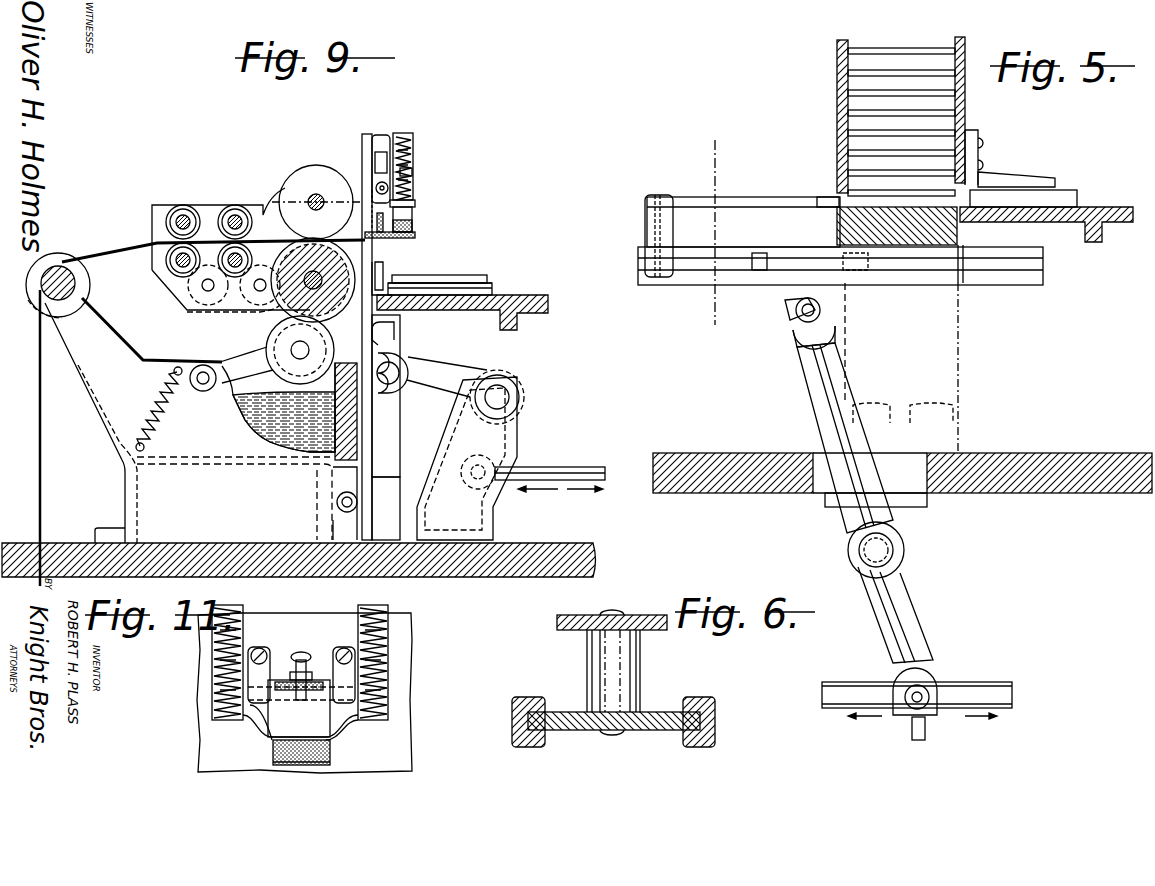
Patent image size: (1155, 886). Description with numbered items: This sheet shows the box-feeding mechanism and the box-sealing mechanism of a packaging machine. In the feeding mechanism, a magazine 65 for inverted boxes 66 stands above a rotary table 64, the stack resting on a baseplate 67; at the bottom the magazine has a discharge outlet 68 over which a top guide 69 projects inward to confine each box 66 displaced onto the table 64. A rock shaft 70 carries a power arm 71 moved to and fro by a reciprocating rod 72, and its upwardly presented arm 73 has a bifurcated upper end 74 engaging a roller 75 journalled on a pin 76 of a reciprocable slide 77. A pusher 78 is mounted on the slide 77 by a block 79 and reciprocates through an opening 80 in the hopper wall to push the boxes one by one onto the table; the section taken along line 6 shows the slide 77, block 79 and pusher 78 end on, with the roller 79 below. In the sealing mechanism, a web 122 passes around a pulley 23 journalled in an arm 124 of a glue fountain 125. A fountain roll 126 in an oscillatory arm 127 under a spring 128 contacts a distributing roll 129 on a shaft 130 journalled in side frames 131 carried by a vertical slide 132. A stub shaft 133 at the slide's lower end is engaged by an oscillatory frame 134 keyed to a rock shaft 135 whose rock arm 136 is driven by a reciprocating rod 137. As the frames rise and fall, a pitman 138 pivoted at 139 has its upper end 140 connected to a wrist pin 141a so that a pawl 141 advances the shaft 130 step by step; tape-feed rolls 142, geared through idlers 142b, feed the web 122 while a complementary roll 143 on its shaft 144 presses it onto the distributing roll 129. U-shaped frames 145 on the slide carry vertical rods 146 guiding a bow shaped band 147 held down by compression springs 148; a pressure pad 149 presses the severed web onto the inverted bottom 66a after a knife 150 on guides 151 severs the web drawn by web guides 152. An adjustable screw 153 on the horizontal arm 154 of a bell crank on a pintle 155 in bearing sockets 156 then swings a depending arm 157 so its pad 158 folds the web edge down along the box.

In FIG. 5, the section line 6 is at (714, 229).
In FIG. 9, the feed roller 23 is at (40, 290).
In FIG. 9, the rotary table 64 is at (549, 303).
In FIG. 5, the rotary table 64 is at (1125, 207).
In FIG. 5, the magazine 65 is at (837, 75).
In FIG. 9, the box 66 is at (484, 290).
In FIG. 5, the box 66 is at (886, 75).
In FIG. 9, the inverted bottom 66a is at (488, 276).
In FIG. 5, the baseplate 67 is at (920, 260).
In FIG. 5, the discharge outlet 68 is at (962, 215).
In FIG. 5, the top guide 69 is at (1022, 180).
In FIG. 5, the rock shaft 70 is at (893, 545).
In FIG. 5, the power arm 71 is at (910, 617).
In FIG. 5, the reciprocating rod 72 is at (1005, 690).
In FIG. 5, the upwardly presented arm 73 is at (822, 418).
In FIG. 5, the bifurcated upper end 74 is at (830, 325).
In FIG. 5, the roller 75 is at (796, 314).
In FIG. 5, the pin 76 is at (800, 330).
In FIG. 5, the slide 77 is at (703, 268).
In FIG. 6, the slide 77 is at (590, 725).
In FIG. 5, the pusher 78 is at (745, 202).
In FIG. 6, the pusher 78 is at (637, 628).
In FIG. 5, the block 79 is at (645, 216).
In FIG. 6, the block 79 is at (636, 668).
In FIG. 5, the opening 80 is at (838, 195).
In FIG. 9, the web 122 is at (40, 491).
In FIG. 9, the arm 124 is at (91, 423).
In FIG. 9, the glue fountain 125 is at (287, 411).
In FIG. 9, the fountain roll 126 is at (306, 357).
In FIG. 9, the oscillatory arm 127 is at (255, 360).
In FIG. 9, the spring 128 is at (150, 425).
In FIG. 9, the distributing roll 129 is at (383, 278).
In FIG. 9, the shaft 130 is at (440, 287).
In FIG. 9, the side frames 131 is at (188, 292).
In FIG. 9, the slide 132 is at (366, 135).
In FIG. 11, the slide 132 is at (405, 737).
In FIG. 9, the stub shaft 133 is at (396, 385).
In FIG. 9, the oscillatory frame 134 is at (468, 372).
In FIG. 9, the rock shaft 135 is at (510, 397).
In FIG. 9, the rock arm 136 is at (462, 440).
In FIG. 9, the reciprocating rod 137 is at (578, 468).
In FIG. 9, the pitman 138 is at (318, 470).
In FIG. 9, the pivot 139 is at (337, 505).
In FIG. 9, the upper end of pitman 140 is at (322, 283).
In FIG. 9, the pawl 141 is at (290, 240).
In FIG. 9, the wrist pin 141a is at (300, 349).
In FIG. 9, the tape-feed rolls 142 is at (213, 240).
In FIG. 9, the idlers 142b is at (195, 312).
In FIG. 9, the complementary roll 143 is at (300, 170).
In FIG. 9, the shaft 144 is at (318, 193).
In FIG. 9, the U-shaped frames 145 is at (404, 135).
In FIG. 11, the U-shaped frames 145 is at (212, 628).
In FIG. 9, the vertical rod 146 is at (413, 145).
In FIG. 11, the vertical rod 146 is at (212, 684).
In FIG. 9, the bow shaped band 147 is at (415, 205).
In FIG. 11, the bow shaped band 147 is at (262, 735).
In FIG. 9, the compression springs 148 is at (413, 158).
In FIG. 11, the compression springs 148 is at (215, 708).
In FIG. 9, the pressure pad 149 is at (412, 226).
In FIG. 11, the pressure pad 149 is at (331, 753).
In FIG. 9, the knife 150 is at (420, 283).
In FIG. 9, the guides 151 is at (400, 330).
In FIG. 9, the web guides 152 is at (415, 237).
In FIG. 9, the adjustable screw 153 is at (413, 170).
In FIG. 11, the adjustable screw 153 is at (301, 668).
In FIG. 9, the horizontal arm 154 is at (386, 135).
In FIG. 11, the horizontal arm 154 is at (280, 690).
In FIG. 9, the pintle 155 is at (376, 188).
In FIG. 11, the pintle 155 is at (345, 712).
In FIG. 9, the bearing sockets 156 is at (375, 155).
In FIG. 11, the bearing sockets 156 is at (337, 665).
In FIG. 9, the depending arm 157 is at (372, 215).
In FIG. 11, the depending arm 157 is at (255, 722).
In FIG. 9, the pad 158 is at (384, 216).
In FIG. 11, the pad 158 is at (272, 762).